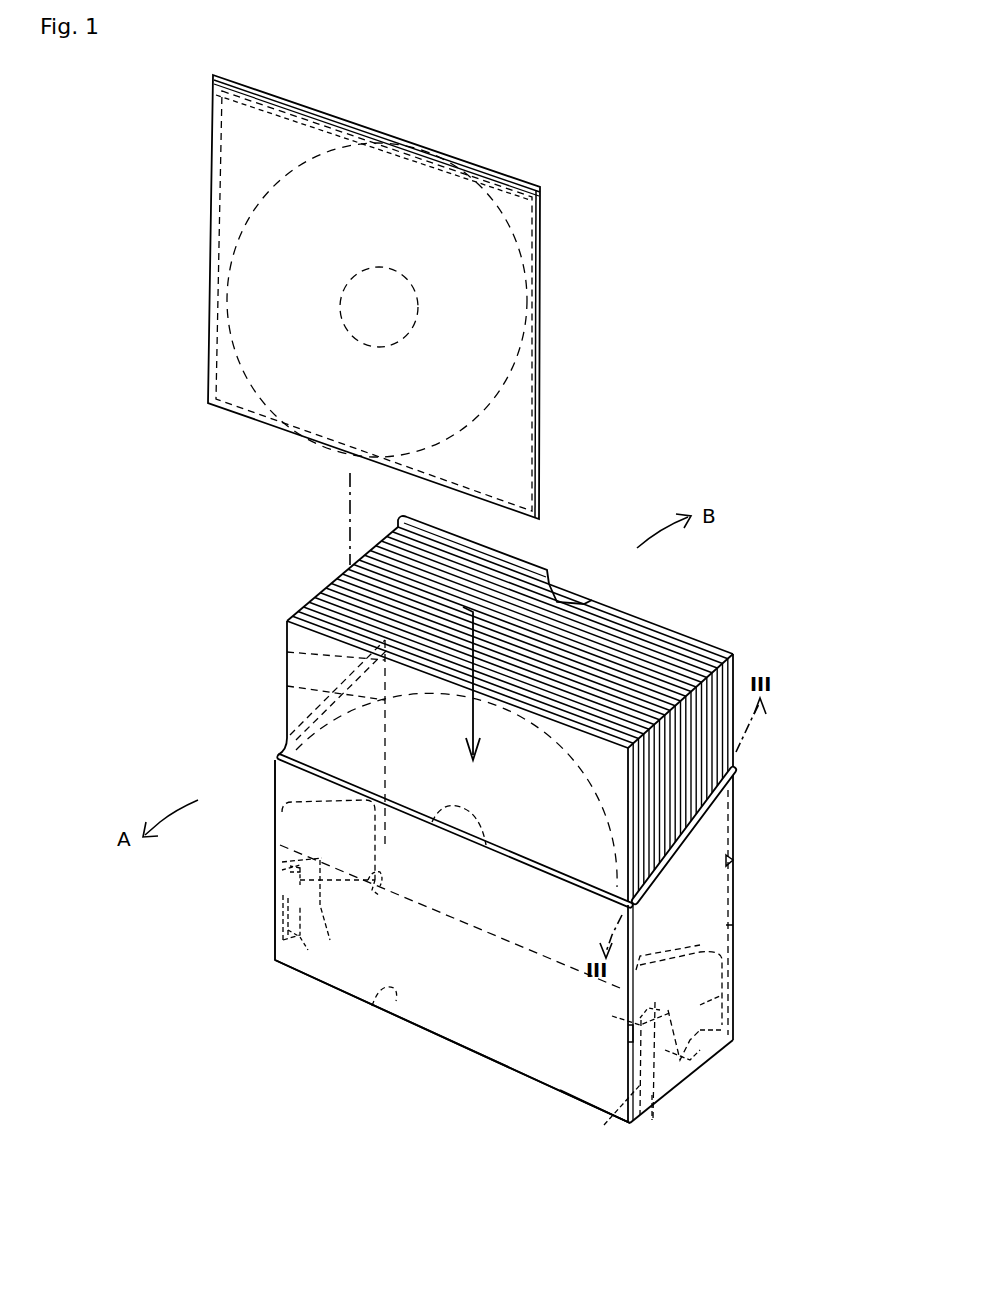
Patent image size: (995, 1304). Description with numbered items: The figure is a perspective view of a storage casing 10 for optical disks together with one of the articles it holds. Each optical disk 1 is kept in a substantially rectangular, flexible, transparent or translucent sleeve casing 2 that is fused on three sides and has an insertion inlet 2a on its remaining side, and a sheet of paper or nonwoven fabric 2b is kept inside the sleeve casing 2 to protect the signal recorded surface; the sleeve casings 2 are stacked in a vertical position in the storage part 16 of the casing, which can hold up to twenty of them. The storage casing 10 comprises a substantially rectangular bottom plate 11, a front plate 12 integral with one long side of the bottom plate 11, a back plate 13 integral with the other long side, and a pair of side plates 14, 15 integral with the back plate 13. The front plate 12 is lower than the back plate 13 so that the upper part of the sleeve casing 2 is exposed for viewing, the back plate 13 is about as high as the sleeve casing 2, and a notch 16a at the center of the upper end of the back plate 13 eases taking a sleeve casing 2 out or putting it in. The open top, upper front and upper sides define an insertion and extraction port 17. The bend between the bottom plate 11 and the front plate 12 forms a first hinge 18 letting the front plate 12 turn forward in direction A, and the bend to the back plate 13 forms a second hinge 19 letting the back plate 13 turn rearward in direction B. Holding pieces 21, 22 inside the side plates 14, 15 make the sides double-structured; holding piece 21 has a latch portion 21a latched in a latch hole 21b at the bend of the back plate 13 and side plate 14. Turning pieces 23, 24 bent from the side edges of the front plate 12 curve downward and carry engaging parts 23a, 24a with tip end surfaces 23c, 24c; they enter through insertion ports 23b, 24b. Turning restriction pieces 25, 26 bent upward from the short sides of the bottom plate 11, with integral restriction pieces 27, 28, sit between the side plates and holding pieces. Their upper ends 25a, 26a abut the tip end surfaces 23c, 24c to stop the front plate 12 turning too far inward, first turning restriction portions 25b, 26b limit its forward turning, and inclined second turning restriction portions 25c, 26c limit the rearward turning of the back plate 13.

The optical disk 1 is at (430, 188).
The sleeve casing 2 is at (541, 262).
The insertion inlet 2a is at (375, 130).
The paper or nonwoven fabric 2b is at (258, 112).
The storage casing 10 is at (781, 628).
The bottom plate 11 is at (378, 1000).
The front plate 12 is at (541, 1072).
The back plate 13 is at (678, 625).
The side plate 14 is at (733, 896).
The side plate 15 is at (287, 686).
The storage part 16 is at (558, 845).
The notch 16a is at (554, 585).
The insertion and extraction port 17 is at (278, 770).
The first hinge 18 is at (435, 1040).
The second hinge 19 is at (435, 905).
The holding piece 21 is at (705, 838).
The latch portion 21a is at (736, 926).
The latch hole 21b is at (733, 858).
The holding piece 22 is at (287, 652).
The turning piece 23 is at (665, 965).
The engaging part 23a is at (722, 996).
The insertion port 23b is at (628, 1038).
The tip end surface 23c is at (722, 1033).
The turning piece 24 is at (282, 806).
The engaging part 24a is at (378, 860).
The insertion port 24b is at (282, 880).
The tip end surface 24c is at (340, 880).
The turning restriction piece 25 is at (668, 1068).
The upper end 25a is at (700, 1070).
The first turning restriction portion 25b is at (653, 1118).
The second turning restriction portion 25c is at (605, 1122).
The turning restriction piece 26 is at (283, 945).
The upper end 26a is at (330, 935).
The first turning restriction portion 26b is at (280, 874).
The second turning restriction portion 26c is at (288, 935).
The restriction piece 27 is at (640, 1018).
The restriction piece 28 is at (282, 860).